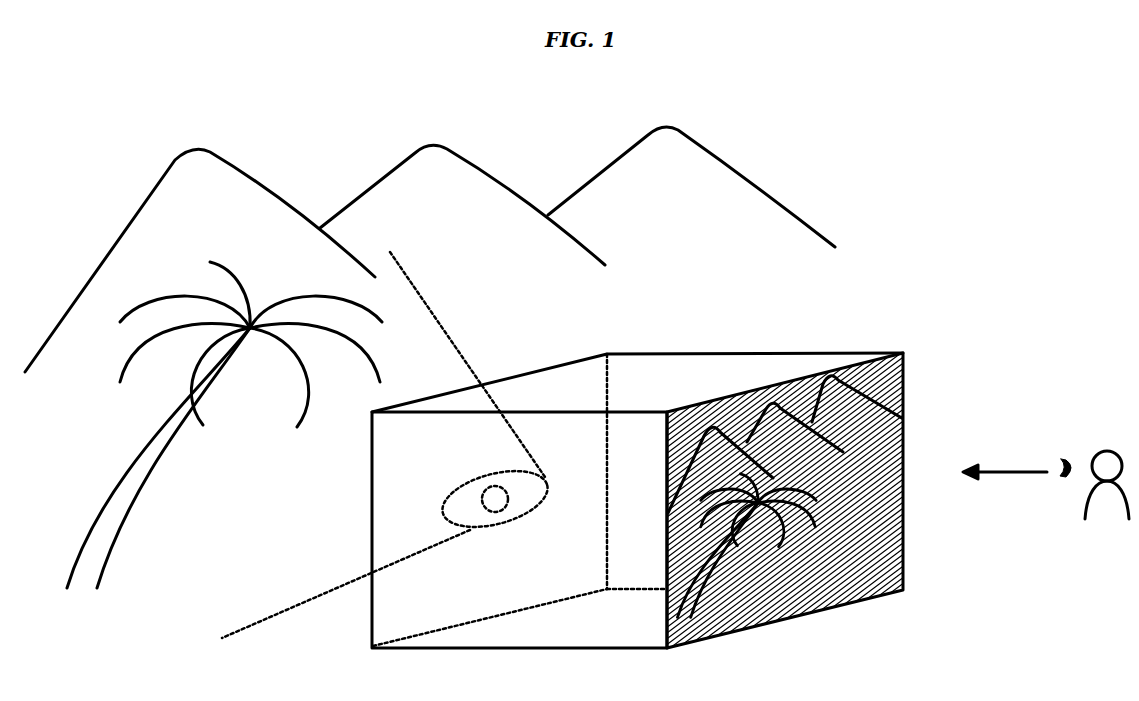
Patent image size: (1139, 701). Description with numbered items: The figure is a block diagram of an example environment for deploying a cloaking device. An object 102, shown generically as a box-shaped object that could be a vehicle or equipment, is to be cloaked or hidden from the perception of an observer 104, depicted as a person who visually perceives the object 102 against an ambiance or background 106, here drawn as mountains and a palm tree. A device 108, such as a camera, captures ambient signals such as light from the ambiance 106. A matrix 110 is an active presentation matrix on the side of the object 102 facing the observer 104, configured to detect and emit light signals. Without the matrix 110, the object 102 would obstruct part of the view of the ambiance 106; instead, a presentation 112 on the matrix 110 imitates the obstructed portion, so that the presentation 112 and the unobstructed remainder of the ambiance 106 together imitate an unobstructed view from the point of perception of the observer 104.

The object 102 is at (618, 630).
The observer 104 is at (1126, 540).
The ambiance 106 is at (255, 174).
The device 108 is at (528, 513).
The matrix 110 is at (813, 612).
The presentation 112 is at (833, 488).